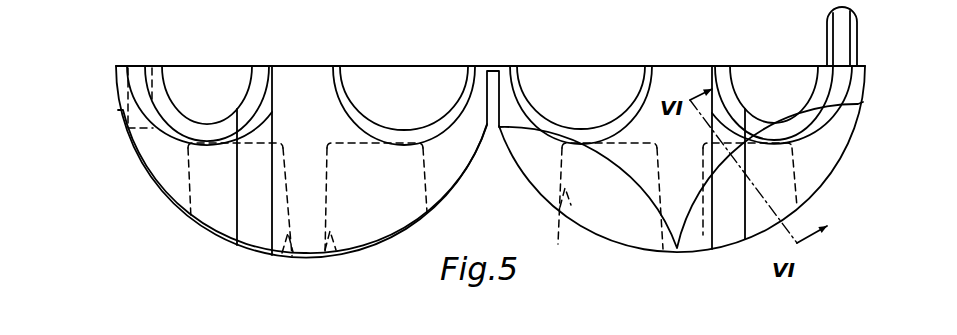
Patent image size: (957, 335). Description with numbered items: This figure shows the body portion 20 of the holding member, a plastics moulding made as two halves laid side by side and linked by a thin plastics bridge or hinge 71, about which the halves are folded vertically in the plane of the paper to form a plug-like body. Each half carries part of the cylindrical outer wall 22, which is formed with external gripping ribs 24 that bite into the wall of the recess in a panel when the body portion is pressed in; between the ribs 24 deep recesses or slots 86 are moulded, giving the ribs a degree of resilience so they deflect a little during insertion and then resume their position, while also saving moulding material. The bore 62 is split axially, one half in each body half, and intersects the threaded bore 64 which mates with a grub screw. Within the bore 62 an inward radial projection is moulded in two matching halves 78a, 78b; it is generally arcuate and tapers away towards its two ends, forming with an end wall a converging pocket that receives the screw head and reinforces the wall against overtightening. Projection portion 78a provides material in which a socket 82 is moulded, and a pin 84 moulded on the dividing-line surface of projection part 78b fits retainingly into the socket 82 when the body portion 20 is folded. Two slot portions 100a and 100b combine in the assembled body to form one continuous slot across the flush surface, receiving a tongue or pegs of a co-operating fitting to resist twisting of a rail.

The body portion 20 is at (876, 88).
The cylindrical outer wall 22 is at (839, 168).
The external ribs 24 is at (282, 258).
The bore 62 is at (146, 86).
The bore 64 is at (347, 94).
The hinge 71 is at (493, 66).
The projection half 78a is at (165, 92).
The projection half 78b is at (814, 88).
The socket 82 is at (155, 93).
The pin 84 is at (853, 27).
The slots 86 is at (264, 261).
The slot portion 100a is at (238, 212).
The slot portion 100b is at (713, 227).